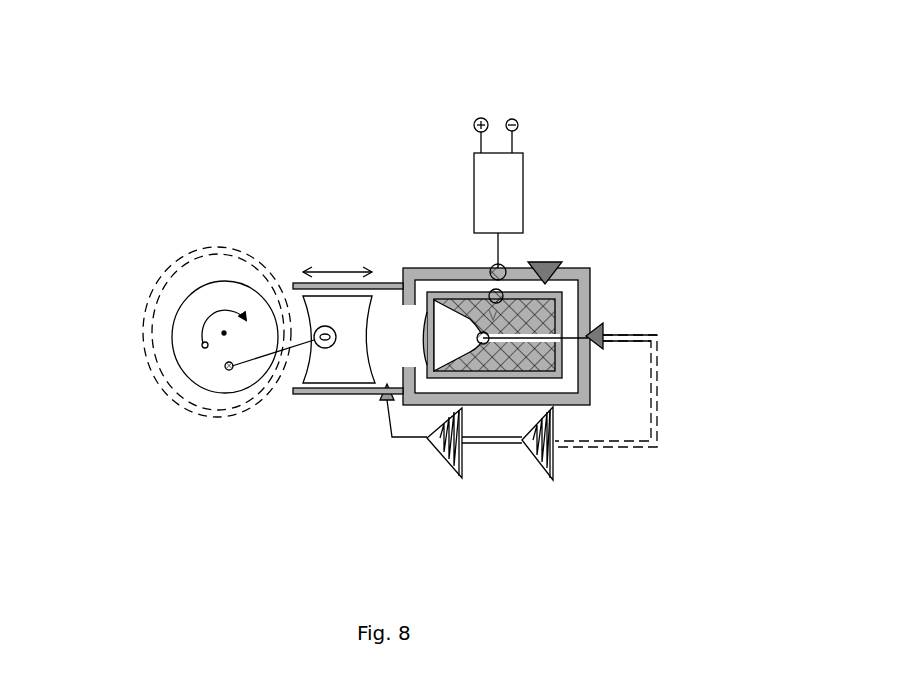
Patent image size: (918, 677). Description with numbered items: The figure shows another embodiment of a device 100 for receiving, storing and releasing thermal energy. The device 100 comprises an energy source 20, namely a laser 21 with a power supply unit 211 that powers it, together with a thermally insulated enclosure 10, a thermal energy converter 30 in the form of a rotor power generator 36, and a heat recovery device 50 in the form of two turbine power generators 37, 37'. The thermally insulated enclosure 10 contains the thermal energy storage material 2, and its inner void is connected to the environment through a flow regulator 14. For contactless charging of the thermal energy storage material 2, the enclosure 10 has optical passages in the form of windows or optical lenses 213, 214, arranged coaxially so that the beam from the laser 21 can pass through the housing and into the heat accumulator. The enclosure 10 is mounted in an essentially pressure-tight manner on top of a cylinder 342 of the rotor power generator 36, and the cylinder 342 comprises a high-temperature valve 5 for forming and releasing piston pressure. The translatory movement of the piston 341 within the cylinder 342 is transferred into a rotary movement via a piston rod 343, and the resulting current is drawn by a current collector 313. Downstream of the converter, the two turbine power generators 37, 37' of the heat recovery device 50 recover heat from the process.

The device 100 is at (350, 110).
The energy source 20 is at (498, 98).
The laser 21 is at (502, 190).
The power supply unit 211 is at (519, 121).
The optical lens 214 is at (494, 266).
The optical lens 213 is at (500, 290).
The flow regulator 14 is at (548, 270).
The thermally insulated enclosure 10 is at (630, 300).
The thermal energy storage material 2 is at (540, 370).
The high-temperature valve 5 is at (480, 341).
The heat recovery device 50 is at (498, 493).
The turbine power generator 37 is at (474, 494).
The turbine power generator 37' is at (560, 495).
The thermal energy converter 30 is at (310, 243).
The current collector 313 is at (150, 348).
The rotor power generator 36 is at (215, 358).
The piston rod 343 is at (277, 357).
The piston 341 is at (340, 358).
The cylinder 342 is at (353, 392).